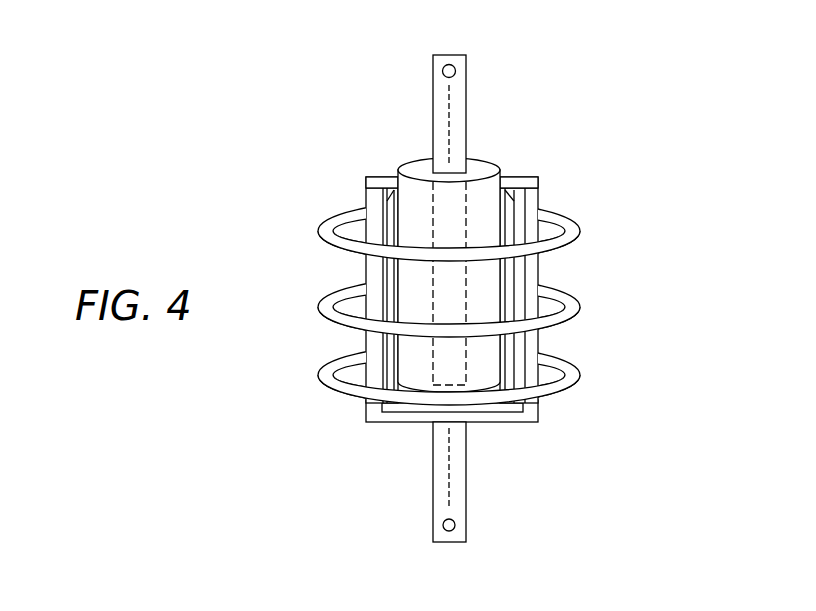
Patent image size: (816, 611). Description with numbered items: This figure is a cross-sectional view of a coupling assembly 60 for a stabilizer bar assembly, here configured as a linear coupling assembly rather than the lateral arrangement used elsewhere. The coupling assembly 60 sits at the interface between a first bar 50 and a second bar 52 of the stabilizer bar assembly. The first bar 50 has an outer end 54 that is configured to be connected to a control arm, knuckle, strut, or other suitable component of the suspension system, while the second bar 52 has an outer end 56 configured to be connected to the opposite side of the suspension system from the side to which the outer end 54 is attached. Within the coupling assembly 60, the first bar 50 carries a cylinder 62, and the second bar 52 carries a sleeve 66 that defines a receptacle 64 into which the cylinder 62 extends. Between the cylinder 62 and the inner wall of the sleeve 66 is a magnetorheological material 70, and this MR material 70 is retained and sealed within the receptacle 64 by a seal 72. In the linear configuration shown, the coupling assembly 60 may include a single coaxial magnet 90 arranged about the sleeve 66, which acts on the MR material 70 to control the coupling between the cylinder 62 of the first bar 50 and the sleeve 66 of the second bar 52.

The first bar 50 is at (463, 208).
The second bar 52 is at (520, 487).
The outer end of the first bar 54 is at (447, 55).
The outer end of the second bar 56 is at (458, 543).
The coupling assembly 60 is at (238, 140).
The cylinder 62 is at (417, 355).
The receptacle 64 is at (385, 404).
The sleeve 66 is at (365, 268).
The magnetorheological material 70 is at (510, 355).
The seal 72 is at (538, 177).
The coaxial magnet 90 is at (580, 313).